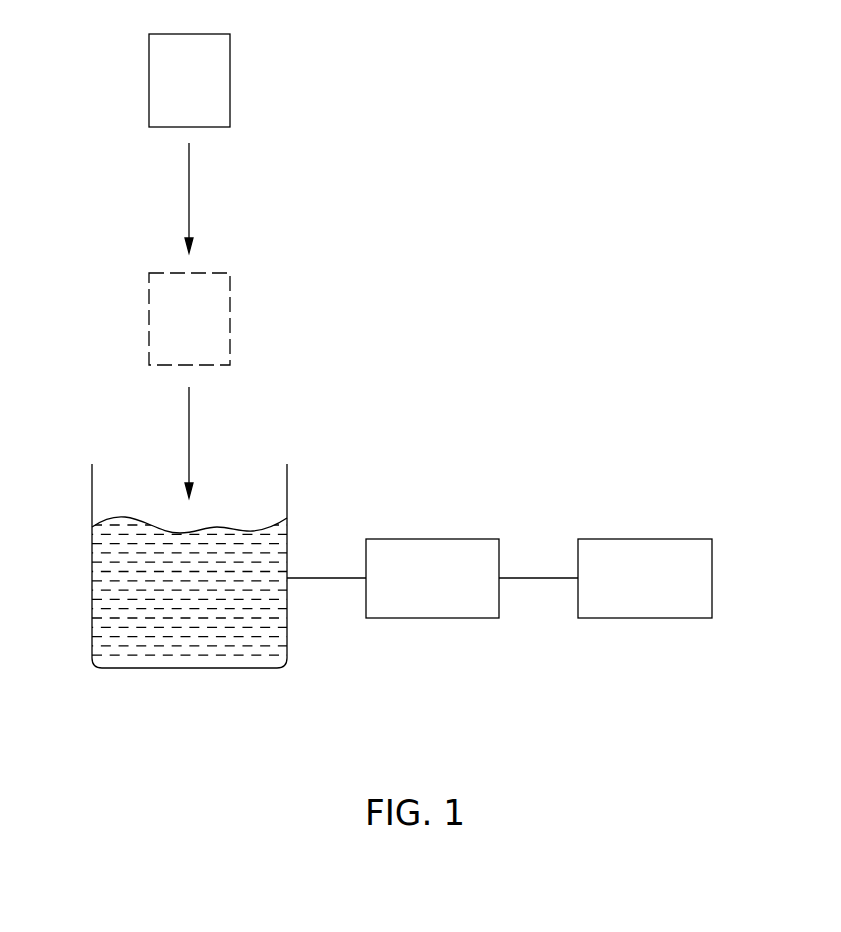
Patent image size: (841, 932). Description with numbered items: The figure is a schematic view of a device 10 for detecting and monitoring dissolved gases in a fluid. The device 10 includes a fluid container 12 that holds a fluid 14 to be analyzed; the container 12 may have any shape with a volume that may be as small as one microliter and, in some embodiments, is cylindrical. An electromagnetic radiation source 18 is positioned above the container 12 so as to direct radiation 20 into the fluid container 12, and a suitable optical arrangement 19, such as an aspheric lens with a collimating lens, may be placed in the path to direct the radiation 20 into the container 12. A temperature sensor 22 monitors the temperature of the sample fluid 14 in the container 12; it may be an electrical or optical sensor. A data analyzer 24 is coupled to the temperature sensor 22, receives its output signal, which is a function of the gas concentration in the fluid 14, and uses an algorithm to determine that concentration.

The device 10 is at (638, 142).
The fluid container 12 is at (92, 622).
The fluid 14 is at (130, 572).
The electromagnetic radiation source 18 is at (230, 76).
The optical arrangement 19 is at (230, 318).
The radiation 20 is at (189, 183).
The temperature sensor 22 is at (433, 539).
The data analyzer 24 is at (646, 539).